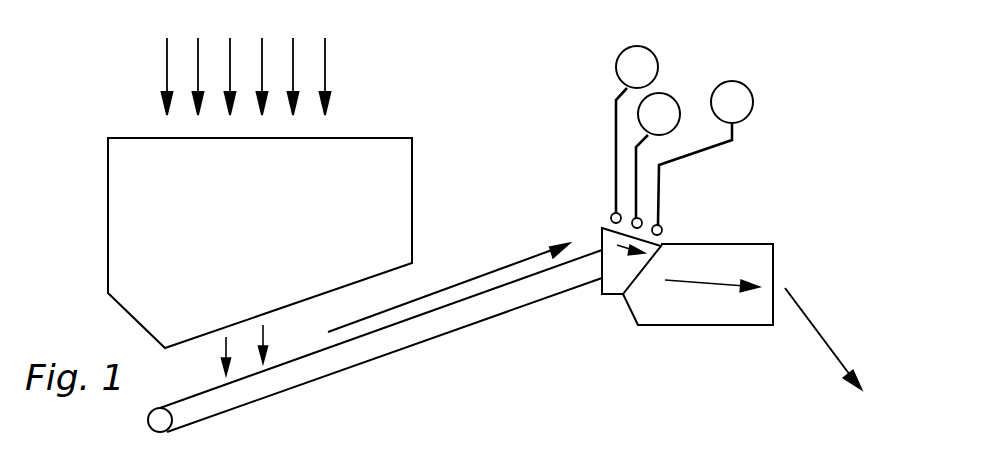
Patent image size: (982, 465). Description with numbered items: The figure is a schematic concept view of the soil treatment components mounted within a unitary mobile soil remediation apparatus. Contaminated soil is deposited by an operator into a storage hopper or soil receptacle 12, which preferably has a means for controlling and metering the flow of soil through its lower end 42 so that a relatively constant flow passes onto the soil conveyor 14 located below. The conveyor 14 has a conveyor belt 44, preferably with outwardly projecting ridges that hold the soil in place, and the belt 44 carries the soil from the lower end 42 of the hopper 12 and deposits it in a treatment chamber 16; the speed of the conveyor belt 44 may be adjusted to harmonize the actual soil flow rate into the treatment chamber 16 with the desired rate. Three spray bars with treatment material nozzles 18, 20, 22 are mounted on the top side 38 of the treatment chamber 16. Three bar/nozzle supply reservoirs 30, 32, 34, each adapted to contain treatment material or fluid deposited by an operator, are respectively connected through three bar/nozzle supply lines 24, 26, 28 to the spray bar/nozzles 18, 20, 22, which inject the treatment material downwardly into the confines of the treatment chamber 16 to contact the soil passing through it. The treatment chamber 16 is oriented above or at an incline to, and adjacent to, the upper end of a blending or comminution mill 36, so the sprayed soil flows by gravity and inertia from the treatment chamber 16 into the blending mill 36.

The storage hopper 12 is at (350, 138).
The soil conveyor 14 is at (223, 412).
The treatment chamber 16 is at (608, 297).
The spray bar with treatment material nozzles 18 is at (612, 215).
The spray bar with treatment material nozzles 20 is at (630, 219).
The spray bar with treatment material nozzles 22 is at (634, 219).
The bar/nozzle supply line 24 is at (616, 180).
The bar/nozzle supply line 26 is at (635, 197).
The bar/nozzle supply line 28 is at (657, 213).
The bar/nozzle supply reservoir 30 is at (656, 53).
The bar/nozzle supply reservoir 32 is at (673, 97).
The bar/nozzle supply reservoir 34 is at (753, 93).
The blending mill 36 is at (705, 326).
The top side of the treatment chamber 38 is at (612, 225).
The lower end of the soil hopper 42 is at (393, 268).
The conveyor belt 44 is at (390, 352).